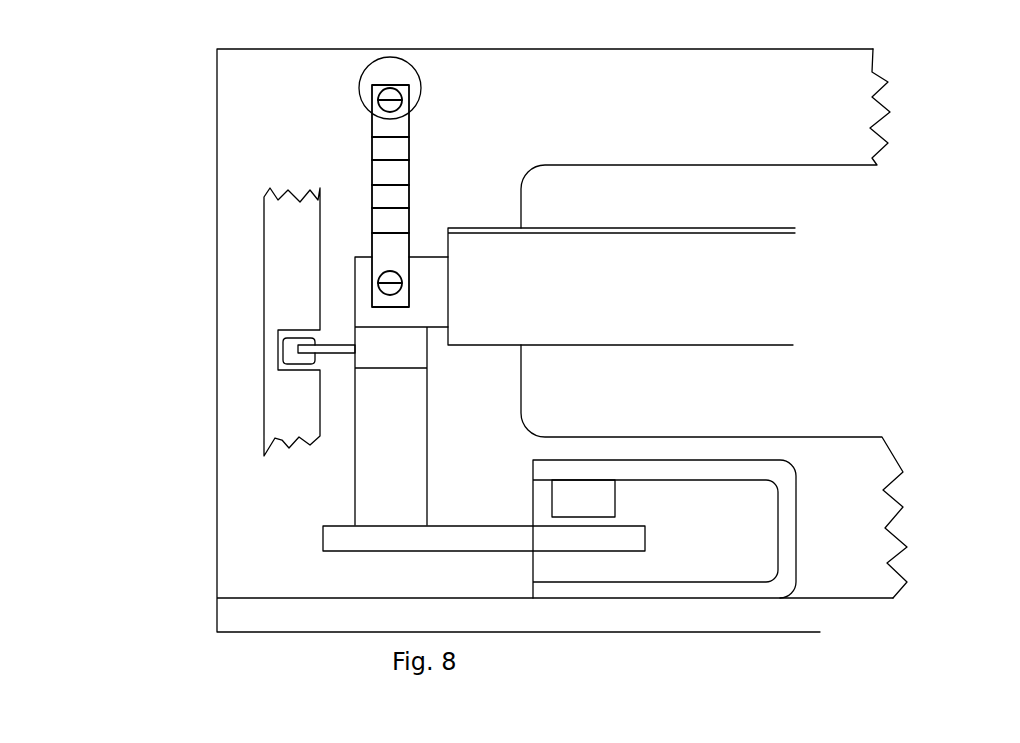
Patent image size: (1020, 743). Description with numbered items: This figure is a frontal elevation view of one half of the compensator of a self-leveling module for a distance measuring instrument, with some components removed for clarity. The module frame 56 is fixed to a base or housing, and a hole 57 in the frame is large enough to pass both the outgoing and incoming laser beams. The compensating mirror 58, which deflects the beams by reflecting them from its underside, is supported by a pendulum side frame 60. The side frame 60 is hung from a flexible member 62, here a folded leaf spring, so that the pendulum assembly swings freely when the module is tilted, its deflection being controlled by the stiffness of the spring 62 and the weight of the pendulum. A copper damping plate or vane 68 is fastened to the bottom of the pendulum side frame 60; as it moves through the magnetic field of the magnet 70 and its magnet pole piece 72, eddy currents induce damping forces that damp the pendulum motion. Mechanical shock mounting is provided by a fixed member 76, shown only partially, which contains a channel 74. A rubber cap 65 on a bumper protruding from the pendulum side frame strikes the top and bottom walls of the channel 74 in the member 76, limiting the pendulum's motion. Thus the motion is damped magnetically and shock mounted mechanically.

The module frame 56 is at (283, 48).
The hole 57 is at (679, 165).
The compensating mirror 58 is at (645, 230).
The pendulum side frame 60 is at (355, 468).
The flexible member 62 is at (409, 137).
The rubber cap 65 is at (282, 363).
The copper damping plate 68 is at (323, 537).
The magnet 70 is at (613, 497).
The magnet pole piece 72 is at (695, 480).
The channel 74 is at (298, 333).
The fixed member 76 is at (262, 322).